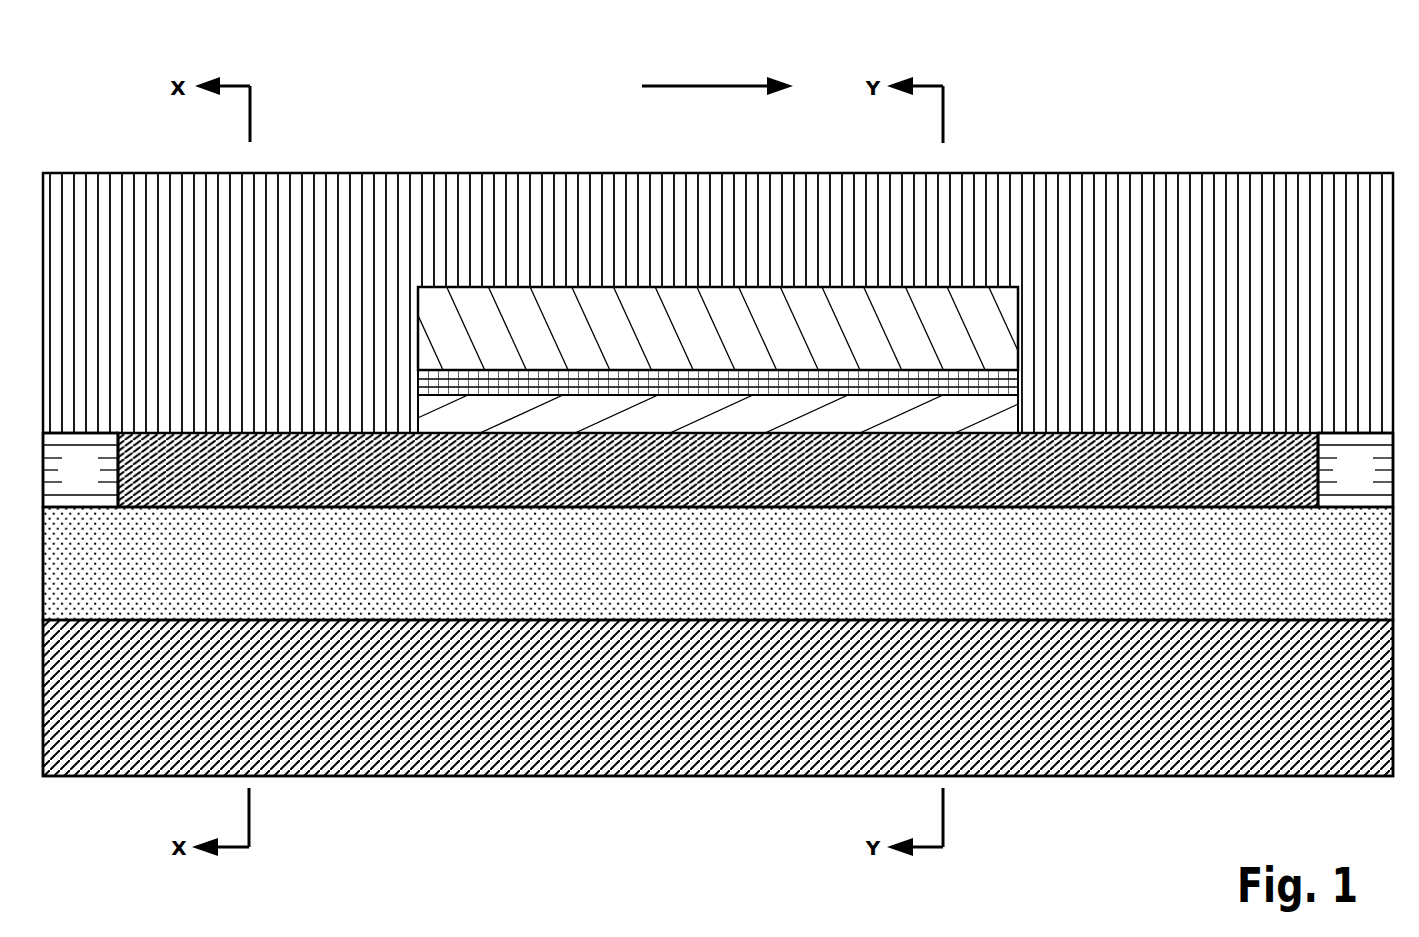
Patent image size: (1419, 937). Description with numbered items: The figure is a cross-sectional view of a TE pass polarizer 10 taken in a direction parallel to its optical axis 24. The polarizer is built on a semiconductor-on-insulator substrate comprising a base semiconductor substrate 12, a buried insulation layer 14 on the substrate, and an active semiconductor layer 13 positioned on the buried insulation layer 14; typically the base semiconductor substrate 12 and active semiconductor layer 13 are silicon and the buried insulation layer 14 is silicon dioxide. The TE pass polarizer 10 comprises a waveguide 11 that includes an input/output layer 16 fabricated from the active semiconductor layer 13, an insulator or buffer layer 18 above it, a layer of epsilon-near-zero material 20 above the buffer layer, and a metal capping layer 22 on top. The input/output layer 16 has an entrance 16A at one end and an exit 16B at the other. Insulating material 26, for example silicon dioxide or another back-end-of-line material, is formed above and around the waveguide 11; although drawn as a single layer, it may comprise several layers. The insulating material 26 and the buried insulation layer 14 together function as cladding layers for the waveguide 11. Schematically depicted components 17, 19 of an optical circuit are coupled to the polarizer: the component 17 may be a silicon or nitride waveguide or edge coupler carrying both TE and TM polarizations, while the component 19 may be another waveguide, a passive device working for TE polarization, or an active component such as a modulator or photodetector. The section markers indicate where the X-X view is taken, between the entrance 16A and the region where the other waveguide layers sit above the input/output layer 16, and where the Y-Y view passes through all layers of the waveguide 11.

The TE pass polarizer 10 is at (1240, 104).
The waveguide 11 is at (1092, 268).
The base semiconductor substrate 12 is at (1334, 665).
The active semiconductor layer 13 is at (1170, 492).
The buried insulation layer 14 is at (1332, 590).
The input/output layer 16 is at (719, 482).
The entrance 16A is at (120, 470).
The exit 16B is at (1316, 470).
The component 17 is at (68, 482).
The insulator or buffer layer 18 is at (714, 421).
The component 19 is at (1344, 482).
The layer of epsilon-near-zero (ENZ) material 20 is at (714, 393).
The metal capping layer 22 is at (714, 336).
The optical axis 24 is at (702, 86).
The insulating material 26 is at (222, 248).